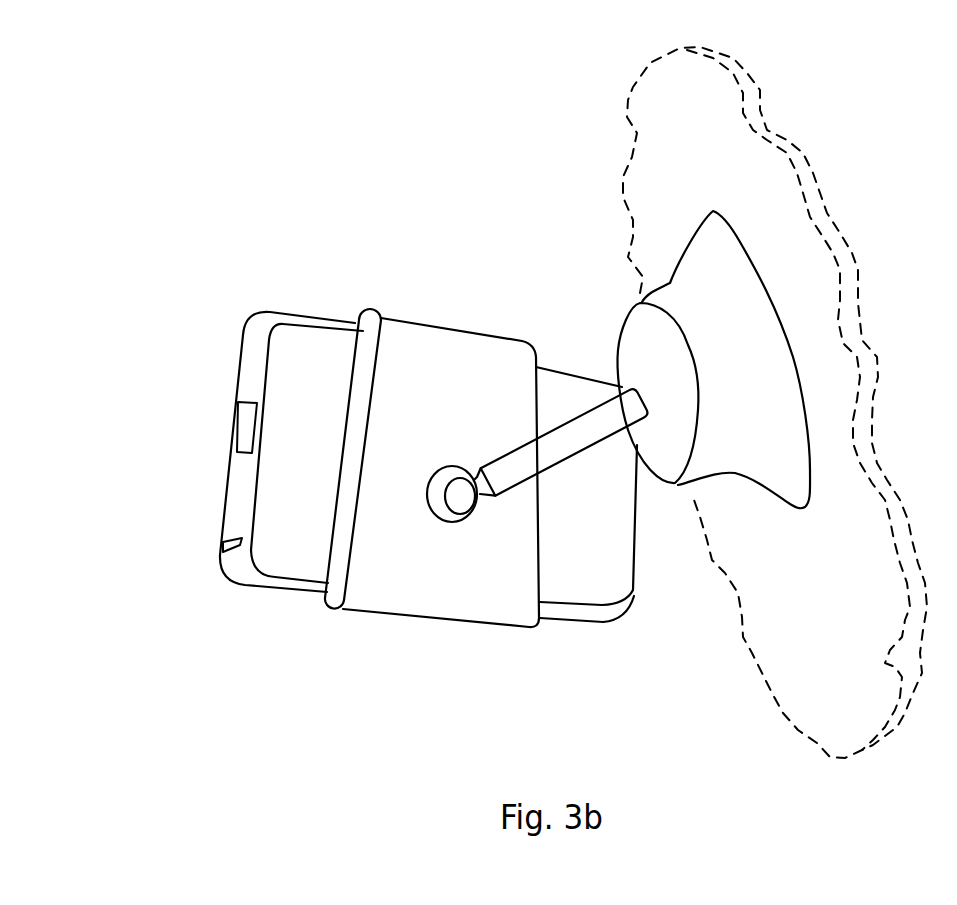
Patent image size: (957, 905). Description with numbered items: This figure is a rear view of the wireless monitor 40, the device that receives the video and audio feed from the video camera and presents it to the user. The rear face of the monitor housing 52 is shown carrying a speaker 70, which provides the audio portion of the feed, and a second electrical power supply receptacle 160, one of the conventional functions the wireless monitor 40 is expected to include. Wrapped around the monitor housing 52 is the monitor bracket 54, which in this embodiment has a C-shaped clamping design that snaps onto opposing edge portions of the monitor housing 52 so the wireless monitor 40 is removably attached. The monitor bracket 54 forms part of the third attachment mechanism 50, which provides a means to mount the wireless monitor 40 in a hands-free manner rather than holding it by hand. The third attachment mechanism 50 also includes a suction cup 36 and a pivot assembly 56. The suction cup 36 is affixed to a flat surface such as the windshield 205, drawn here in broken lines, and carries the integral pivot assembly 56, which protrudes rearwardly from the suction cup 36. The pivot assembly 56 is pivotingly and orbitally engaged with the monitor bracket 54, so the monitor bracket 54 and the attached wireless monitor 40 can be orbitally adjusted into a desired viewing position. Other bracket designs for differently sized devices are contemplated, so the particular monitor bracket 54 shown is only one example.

The wireless monitor 40 is at (240, 233).
The monitor housing 52 is at (240, 468).
The speaker 70 is at (245, 430).
The second electrical power supply receptacle 160 is at (222, 548).
The monitor bracket 54 is at (417, 353).
The third attachment mechanism 50 is at (603, 291).
The pivot assembly 56 is at (517, 467).
The suction cup 36 is at (770, 425).
The windshield 205 is at (803, 667).